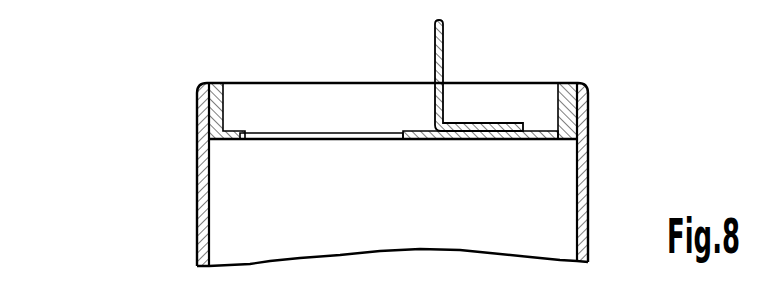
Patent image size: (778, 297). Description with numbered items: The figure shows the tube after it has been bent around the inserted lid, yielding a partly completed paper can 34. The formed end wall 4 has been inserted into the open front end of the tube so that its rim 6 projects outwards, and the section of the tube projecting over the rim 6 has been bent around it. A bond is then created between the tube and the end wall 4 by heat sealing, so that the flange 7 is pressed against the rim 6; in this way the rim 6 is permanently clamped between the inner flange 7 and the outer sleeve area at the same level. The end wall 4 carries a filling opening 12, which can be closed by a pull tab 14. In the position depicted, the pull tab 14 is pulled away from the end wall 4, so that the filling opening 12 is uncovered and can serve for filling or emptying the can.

The partly completed paper can 34 is at (172, 200).
The rim 6 is at (200, 117).
The flange 7 is at (562, 110).
The filling opening 12 is at (283, 136).
The end wall 4 is at (419, 130).
The pull tab 14 is at (443, 45).